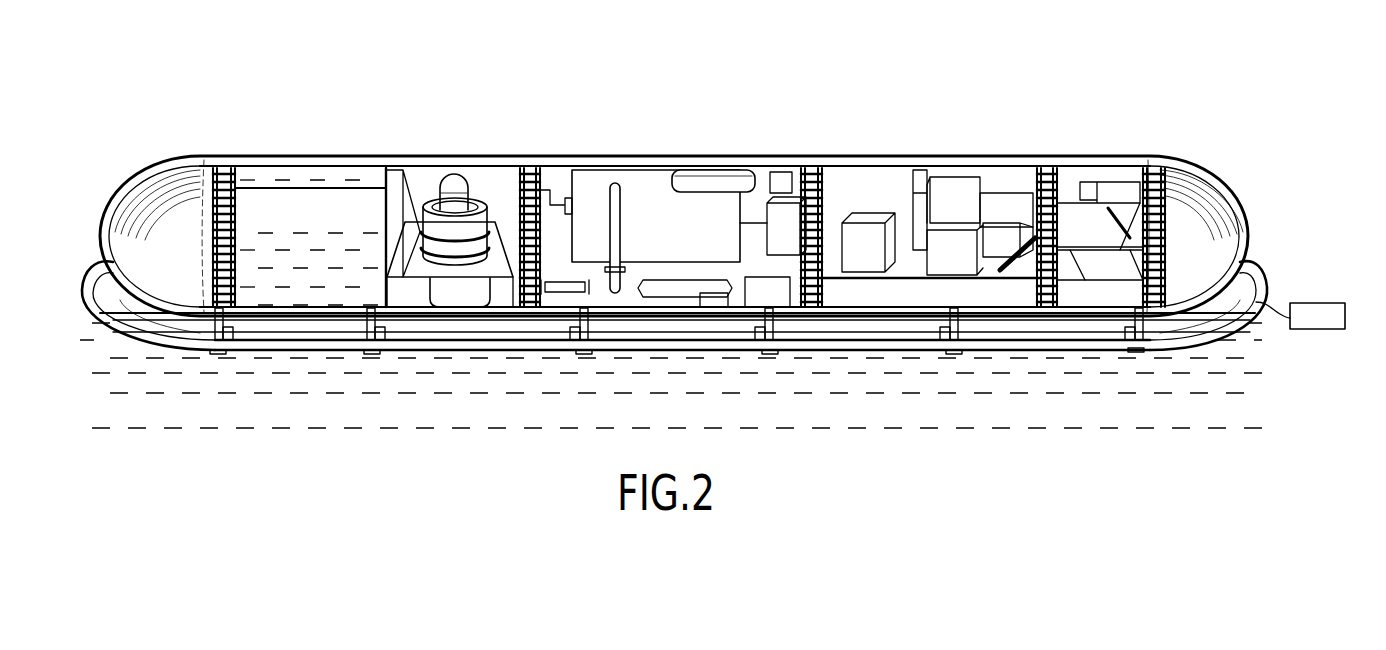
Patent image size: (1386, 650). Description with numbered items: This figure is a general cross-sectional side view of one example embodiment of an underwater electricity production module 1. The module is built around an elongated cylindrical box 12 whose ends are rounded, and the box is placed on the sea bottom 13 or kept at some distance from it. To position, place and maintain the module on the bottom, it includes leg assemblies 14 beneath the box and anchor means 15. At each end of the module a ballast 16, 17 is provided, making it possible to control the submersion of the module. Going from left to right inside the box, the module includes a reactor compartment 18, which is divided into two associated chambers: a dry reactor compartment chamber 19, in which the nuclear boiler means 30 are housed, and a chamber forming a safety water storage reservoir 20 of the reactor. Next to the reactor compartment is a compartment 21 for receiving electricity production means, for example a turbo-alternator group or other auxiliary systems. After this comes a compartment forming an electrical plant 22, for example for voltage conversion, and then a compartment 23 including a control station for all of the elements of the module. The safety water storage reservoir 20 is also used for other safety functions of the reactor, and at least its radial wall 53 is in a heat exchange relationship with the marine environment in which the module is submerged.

The underwater electricity production module 1 is at (712, 223).
The elongated cylindrical box 12 is at (1122, 140).
The sea bottom 13 is at (671, 375).
The leg assemblies 14 is at (1279, 275).
The anchor means 15 is at (1318, 297).
The ballast 16 is at (167, 145).
The ballast 17 is at (1248, 172).
The reactor compartment 18 is at (378, 139).
The dry reactor compartment chamber 19 is at (479, 179).
The safety water storage reservoir 20 is at (302, 146).
The electricity production compartment 21 is at (715, 146).
The electrical plant compartment 22 is at (893, 146).
The control station compartment 23 is at (1048, 146).
The nuclear boiler means 30 is at (479, 169).
The radial wall 53 is at (310, 316).